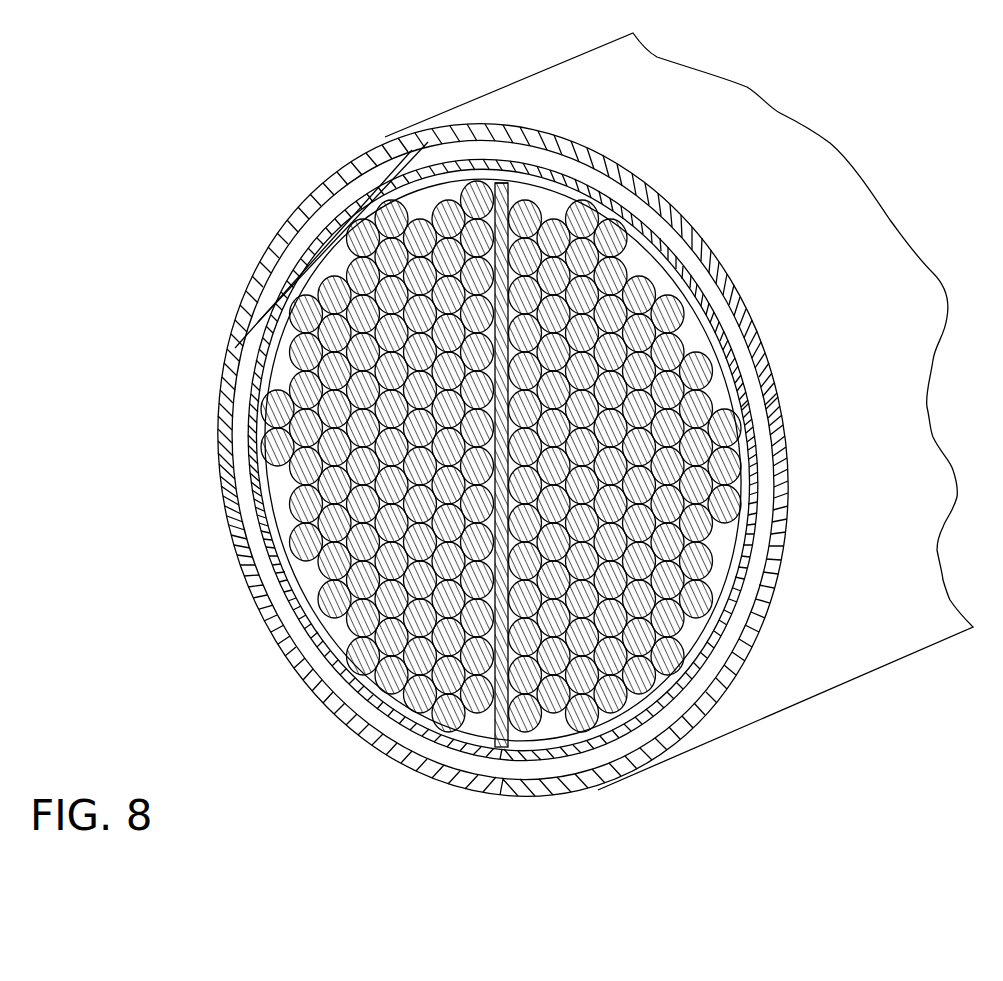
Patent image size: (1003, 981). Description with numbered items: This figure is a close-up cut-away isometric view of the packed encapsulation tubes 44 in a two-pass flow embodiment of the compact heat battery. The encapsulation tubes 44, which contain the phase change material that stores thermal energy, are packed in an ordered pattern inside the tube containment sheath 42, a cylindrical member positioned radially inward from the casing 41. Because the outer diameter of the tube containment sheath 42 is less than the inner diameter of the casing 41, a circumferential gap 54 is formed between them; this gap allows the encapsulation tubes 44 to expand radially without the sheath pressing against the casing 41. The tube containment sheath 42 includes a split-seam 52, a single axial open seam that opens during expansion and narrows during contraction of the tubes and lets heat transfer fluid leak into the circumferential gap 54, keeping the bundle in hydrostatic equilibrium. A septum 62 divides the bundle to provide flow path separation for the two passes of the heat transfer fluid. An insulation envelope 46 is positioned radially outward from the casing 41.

The casing 41 is at (300, 228).
The tube containment sheath 42 is at (280, 296).
The encapsulation tubes 44 is at (310, 452).
The insulation envelope 46 is at (721, 143).
The split-seam 52 is at (478, 747).
The circumferential gap 54 is at (357, 172).
The septum 62 is at (520, 203).